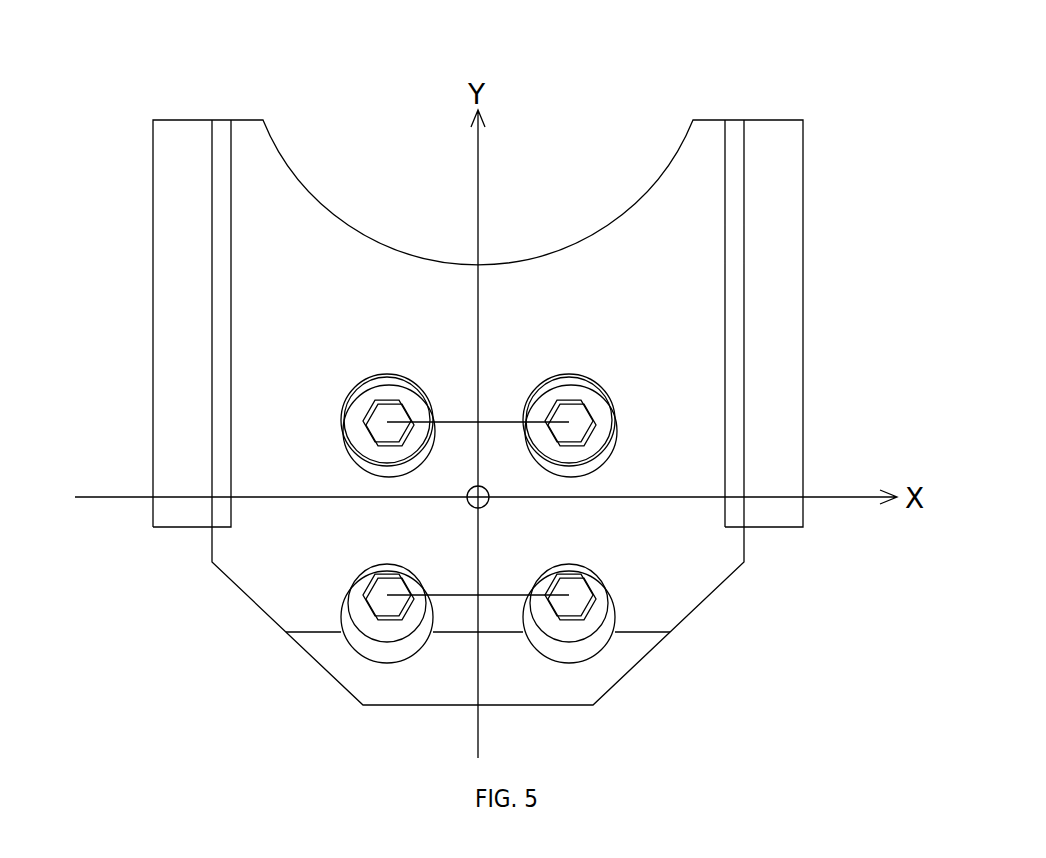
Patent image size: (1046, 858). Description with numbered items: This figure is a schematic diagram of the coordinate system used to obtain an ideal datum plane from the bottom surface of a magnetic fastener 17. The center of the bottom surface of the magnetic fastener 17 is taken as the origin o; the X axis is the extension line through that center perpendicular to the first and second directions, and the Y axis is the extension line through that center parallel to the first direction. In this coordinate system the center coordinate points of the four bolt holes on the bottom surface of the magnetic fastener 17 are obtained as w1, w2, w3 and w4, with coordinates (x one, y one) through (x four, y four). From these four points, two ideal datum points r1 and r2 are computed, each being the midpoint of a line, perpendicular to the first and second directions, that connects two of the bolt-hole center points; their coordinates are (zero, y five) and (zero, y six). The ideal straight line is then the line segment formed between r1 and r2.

The magnetic fastener 17 is at (802, 222).
The center coordinate point of the first bolt hole w1 is at (569, 595).
The center coordinate point of the second bolt hole w2 is at (387, 595).
The center coordinate point of the third bolt hole w3 is at (387, 421).
The center coordinate point of the fourth bolt hole w4 is at (569, 421).
The ideal datum point r1 is at (478, 596).
The ideal datum point r2 is at (478, 423).
The origin o is at (485, 500).